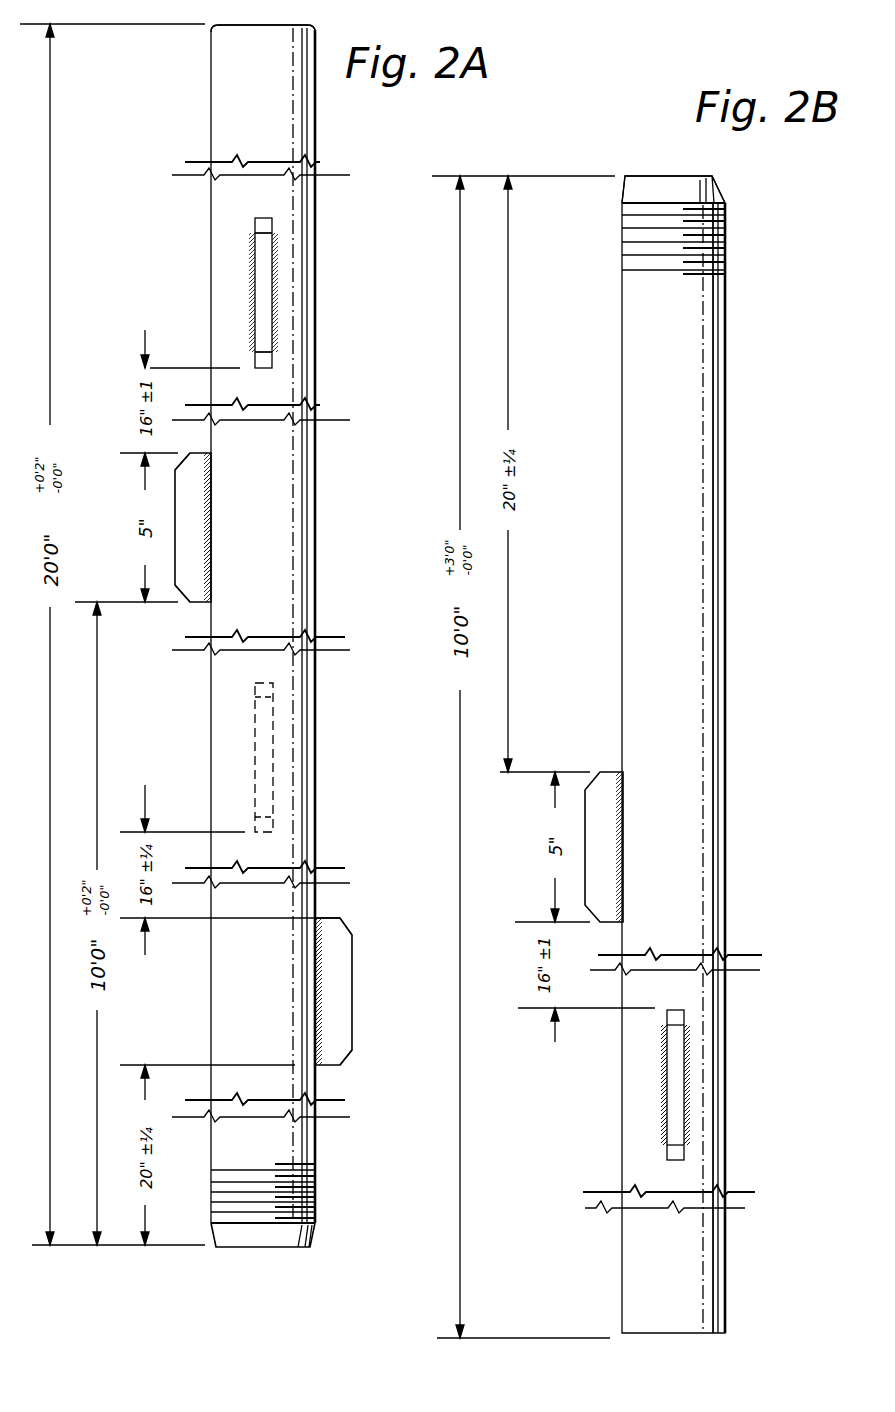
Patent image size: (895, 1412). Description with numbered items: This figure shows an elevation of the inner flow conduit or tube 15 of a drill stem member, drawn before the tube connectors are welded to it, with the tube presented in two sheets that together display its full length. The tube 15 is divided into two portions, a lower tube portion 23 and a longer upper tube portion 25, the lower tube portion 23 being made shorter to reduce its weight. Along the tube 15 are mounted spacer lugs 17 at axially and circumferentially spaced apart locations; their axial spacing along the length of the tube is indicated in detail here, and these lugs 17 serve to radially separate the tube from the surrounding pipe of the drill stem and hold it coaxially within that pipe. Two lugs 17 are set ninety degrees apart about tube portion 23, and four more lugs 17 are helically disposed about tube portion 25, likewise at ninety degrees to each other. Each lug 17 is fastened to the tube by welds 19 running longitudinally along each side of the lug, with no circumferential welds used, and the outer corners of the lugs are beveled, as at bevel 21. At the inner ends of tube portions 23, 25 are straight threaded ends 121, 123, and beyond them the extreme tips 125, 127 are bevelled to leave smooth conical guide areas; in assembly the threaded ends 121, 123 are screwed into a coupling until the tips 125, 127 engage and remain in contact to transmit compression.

In FIG. 2A, the tube 15 is at (318, 480).
In FIG. 2B, the tube 15 is at (729, 537).
In FIG. 2A, the spacer lugs 17 is at (262, 272).
In FIG. 2B, the spacer lugs 17 is at (605, 832).
In FIG. 2A, the welds 19 is at (212, 558).
In FIG. 2B, the welds 19 is at (688, 1090).
In FIG. 2A, the bevel 21 is at (265, 225).
In FIG. 2B, the tube portion 23 is at (718, 376).
In FIG. 2A, the tube portion 25 is at (305, 128).
In FIG. 2B, the threaded end 121 is at (727, 251).
In FIG. 2A, the threaded end 123 is at (318, 1185).
In FIG. 2B, the tip 125 is at (725, 192).
In FIG. 2A, the tip 127 is at (313, 1240).